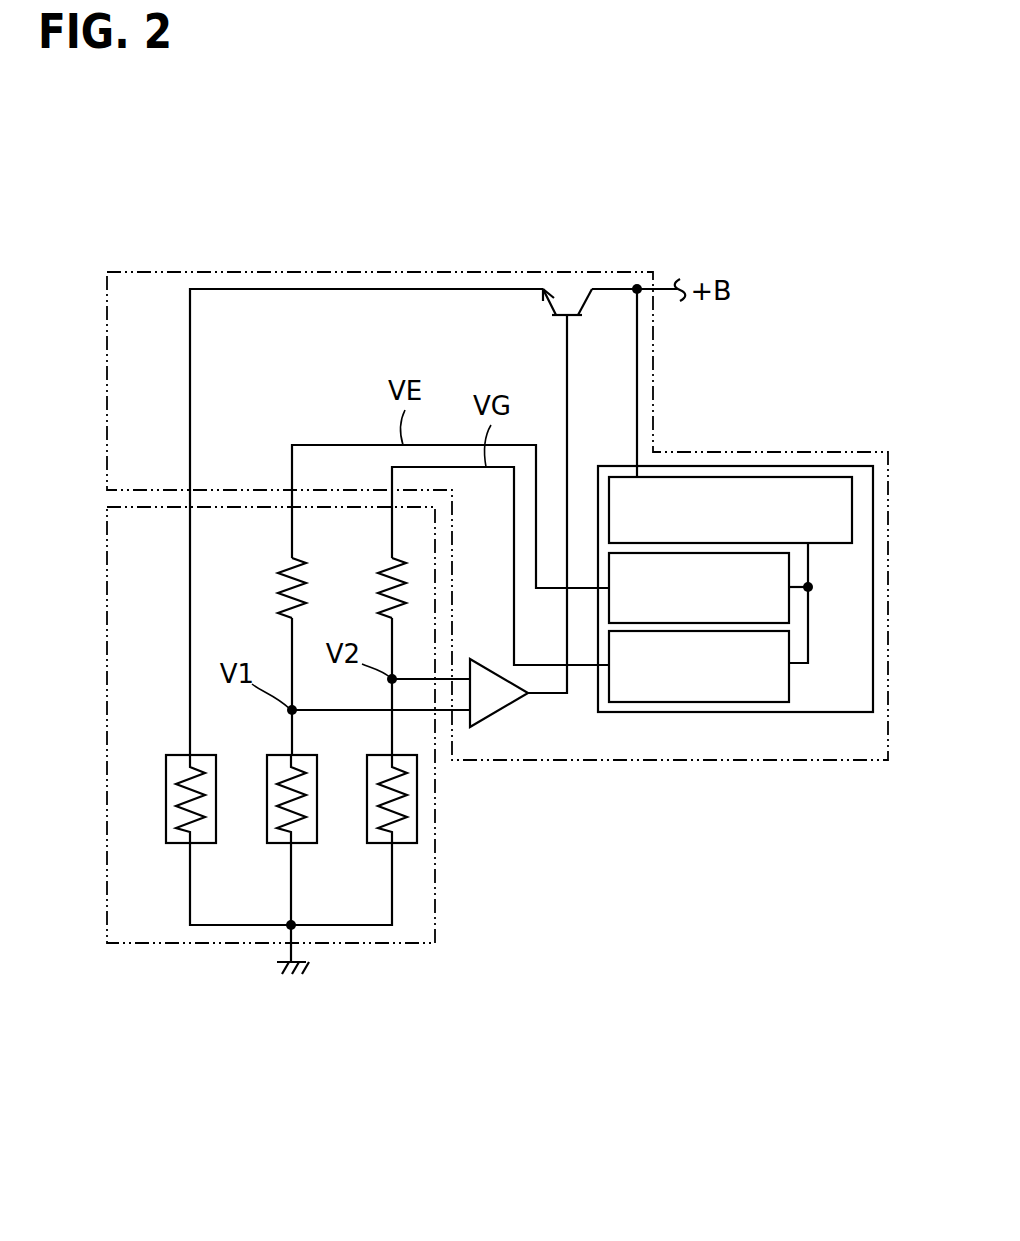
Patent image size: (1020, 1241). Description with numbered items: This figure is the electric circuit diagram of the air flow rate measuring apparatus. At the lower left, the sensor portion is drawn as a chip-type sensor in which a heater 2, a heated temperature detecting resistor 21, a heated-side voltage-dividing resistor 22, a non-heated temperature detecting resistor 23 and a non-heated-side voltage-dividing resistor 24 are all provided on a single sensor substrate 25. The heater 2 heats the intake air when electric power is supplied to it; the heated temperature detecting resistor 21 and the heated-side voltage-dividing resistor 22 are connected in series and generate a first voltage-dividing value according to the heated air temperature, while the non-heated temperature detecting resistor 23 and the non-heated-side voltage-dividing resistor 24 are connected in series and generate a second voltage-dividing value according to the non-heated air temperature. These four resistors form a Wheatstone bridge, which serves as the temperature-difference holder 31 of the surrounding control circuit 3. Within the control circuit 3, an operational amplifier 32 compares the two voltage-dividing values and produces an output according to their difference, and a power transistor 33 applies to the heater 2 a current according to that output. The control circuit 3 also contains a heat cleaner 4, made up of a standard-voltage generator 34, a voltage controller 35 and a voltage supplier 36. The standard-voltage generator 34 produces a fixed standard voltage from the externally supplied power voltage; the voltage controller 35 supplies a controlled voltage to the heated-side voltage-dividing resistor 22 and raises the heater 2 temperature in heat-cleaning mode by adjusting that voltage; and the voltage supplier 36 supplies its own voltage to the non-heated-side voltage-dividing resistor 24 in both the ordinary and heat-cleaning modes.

The heater 2 is at (166, 827).
The control circuit 3 is at (386, 272).
The heat cleaner 4 is at (753, 466).
The heated temperature detecting resistor 21 is at (267, 827).
The heated-side voltage-dividing resistor 22 is at (290, 575).
The non-heated temperature detecting resistor 23 is at (367, 827).
The non-heated-side voltage-dividing resistor 24 is at (390, 575).
The sensor substrate 25 is at (178, 945).
The temperature-difference holder 31 is at (569, 724).
The operational amplifier 32 is at (492, 700).
The power transistor 33 is at (572, 318).
The standard-voltage generator 34 is at (852, 524).
The voltage controller 35 is at (789, 605).
The voltage supplier 36 is at (789, 682).